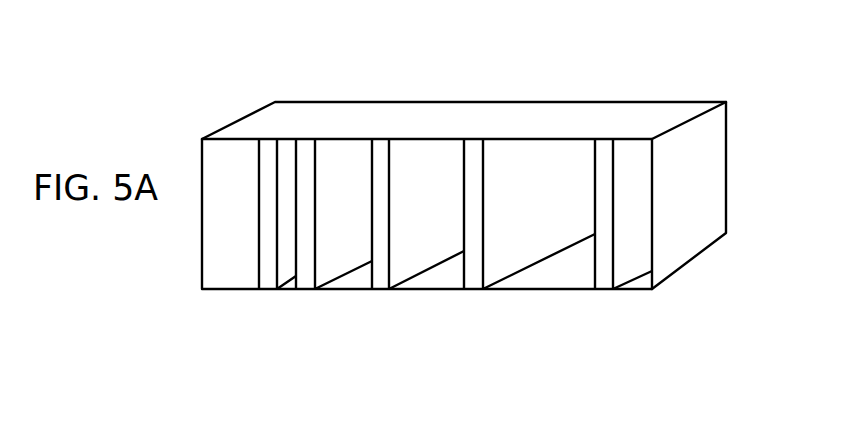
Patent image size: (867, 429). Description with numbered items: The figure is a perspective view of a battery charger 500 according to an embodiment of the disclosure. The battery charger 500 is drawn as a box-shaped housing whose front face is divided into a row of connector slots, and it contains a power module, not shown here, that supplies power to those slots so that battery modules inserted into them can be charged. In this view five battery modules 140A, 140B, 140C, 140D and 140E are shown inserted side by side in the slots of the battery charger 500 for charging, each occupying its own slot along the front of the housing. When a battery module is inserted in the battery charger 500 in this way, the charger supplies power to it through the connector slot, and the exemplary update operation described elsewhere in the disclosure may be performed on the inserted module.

The battery charger 500 is at (298, 102).
The battery module 140A is at (262, 289).
The battery module 140B is at (305, 289).
The battery module 140C is at (382, 289).
The battery module 140D is at (475, 289).
The battery module 140E is at (602, 289).